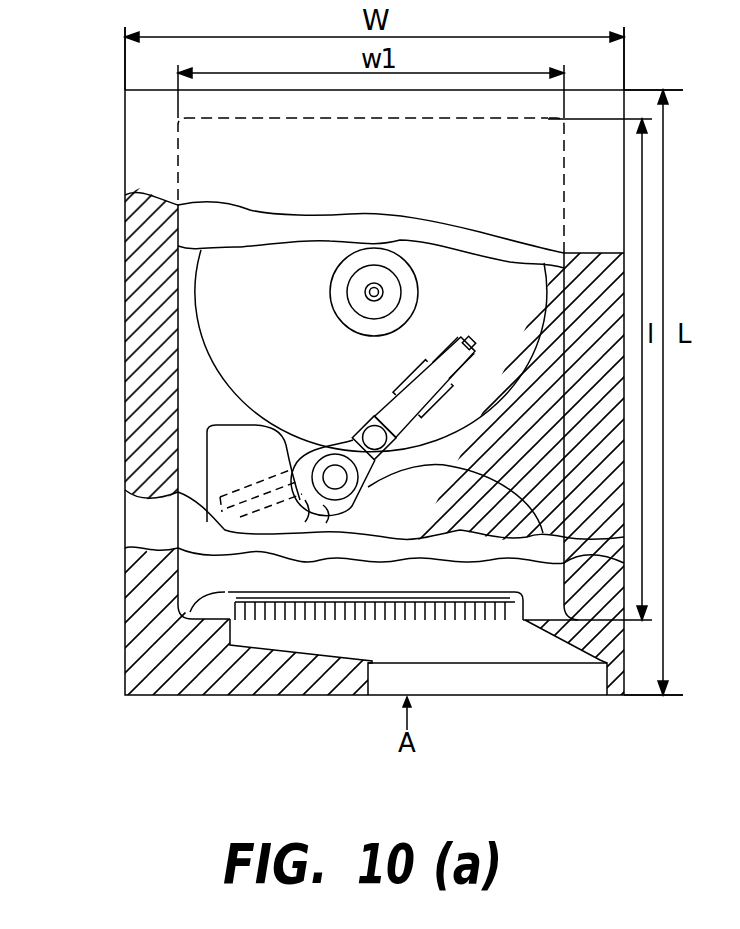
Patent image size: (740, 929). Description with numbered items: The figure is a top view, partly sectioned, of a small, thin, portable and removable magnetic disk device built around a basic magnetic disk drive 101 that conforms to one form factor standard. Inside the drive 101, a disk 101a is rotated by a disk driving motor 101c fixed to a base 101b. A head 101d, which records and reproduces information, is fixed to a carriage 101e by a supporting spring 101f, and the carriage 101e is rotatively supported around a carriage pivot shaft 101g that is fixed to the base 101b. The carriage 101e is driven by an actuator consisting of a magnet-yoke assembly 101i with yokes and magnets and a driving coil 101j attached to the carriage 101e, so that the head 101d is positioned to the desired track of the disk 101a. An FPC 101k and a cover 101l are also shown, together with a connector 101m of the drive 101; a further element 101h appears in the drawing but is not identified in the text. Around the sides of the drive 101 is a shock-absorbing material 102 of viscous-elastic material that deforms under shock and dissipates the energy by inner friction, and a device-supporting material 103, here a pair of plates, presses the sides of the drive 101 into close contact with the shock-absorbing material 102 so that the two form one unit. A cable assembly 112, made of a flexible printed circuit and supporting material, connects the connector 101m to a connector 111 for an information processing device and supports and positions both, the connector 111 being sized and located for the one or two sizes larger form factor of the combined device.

The magnetic disk drive 101 is at (176, 338).
The disk 101a is at (487, 383).
The base 101b is at (188, 284).
The disk driving motor 101c is at (370, 295).
The head 101d is at (468, 342).
The carriage 101e is at (362, 428).
The supporting spring 101f is at (458, 350).
The carriage pivot shaft 101g is at (340, 478).
The voice coil motor 101h is at (350, 490).
The magnet-yoke assembly 101i is at (230, 456).
The driving coil 101j is at (225, 523).
The FPC 101k is at (470, 482).
The cover 101l is at (192, 229).
The connector 101m is at (178, 598).
The shock-absorbing material 102 is at (208, 676).
The device-supporting material 103 is at (140, 158).
The connector 111 is at (553, 677).
The cable assembly 112 is at (493, 642).